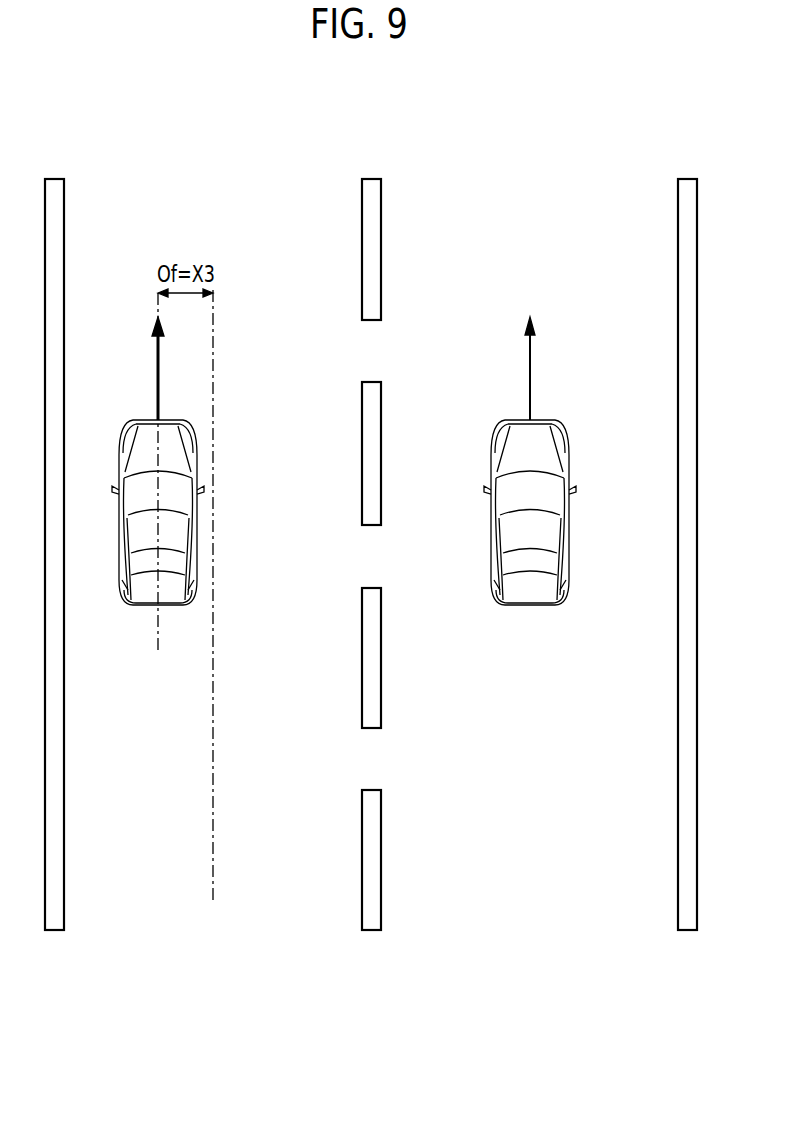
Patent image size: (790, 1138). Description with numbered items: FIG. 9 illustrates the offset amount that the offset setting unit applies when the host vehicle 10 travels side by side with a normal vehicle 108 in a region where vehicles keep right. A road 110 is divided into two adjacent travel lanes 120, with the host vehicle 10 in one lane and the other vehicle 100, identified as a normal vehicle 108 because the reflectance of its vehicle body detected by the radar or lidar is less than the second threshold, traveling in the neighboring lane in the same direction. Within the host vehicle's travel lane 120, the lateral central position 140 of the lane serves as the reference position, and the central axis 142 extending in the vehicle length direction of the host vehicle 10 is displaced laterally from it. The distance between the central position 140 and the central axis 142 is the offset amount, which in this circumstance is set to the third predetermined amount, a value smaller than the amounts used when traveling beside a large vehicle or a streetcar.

The host vehicle 10 is at (145, 421).
The other vehicle 100 is at (528, 606).
The normal vehicle 108 is at (530, 509).
The road 110 is at (552, 122).
The travel lane 120 is at (363, 170).
The central position 140 is at (212, 725).
The central axis 142 is at (158, 523).